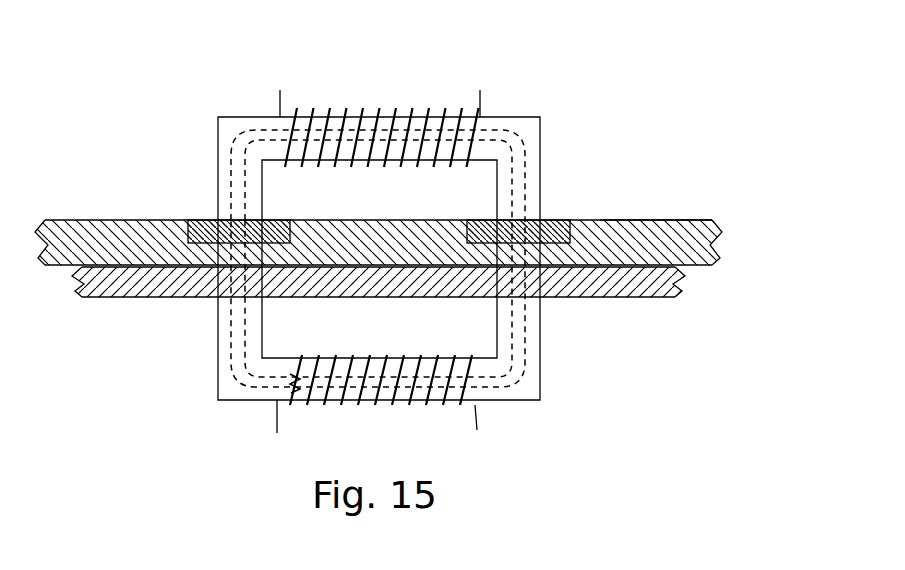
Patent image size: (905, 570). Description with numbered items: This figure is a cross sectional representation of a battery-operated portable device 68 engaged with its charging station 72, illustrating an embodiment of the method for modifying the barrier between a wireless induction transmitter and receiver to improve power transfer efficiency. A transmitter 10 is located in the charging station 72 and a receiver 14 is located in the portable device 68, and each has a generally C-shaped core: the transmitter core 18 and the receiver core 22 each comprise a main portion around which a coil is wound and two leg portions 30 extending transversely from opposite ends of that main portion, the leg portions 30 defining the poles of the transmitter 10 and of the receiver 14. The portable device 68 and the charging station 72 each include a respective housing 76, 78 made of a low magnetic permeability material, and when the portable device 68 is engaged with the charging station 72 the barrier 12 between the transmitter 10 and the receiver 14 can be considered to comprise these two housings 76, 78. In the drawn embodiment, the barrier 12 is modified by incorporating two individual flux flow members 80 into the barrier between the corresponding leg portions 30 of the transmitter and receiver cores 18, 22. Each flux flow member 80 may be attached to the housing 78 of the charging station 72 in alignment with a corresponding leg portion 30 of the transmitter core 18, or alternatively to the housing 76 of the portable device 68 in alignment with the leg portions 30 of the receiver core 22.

The transmitter 10 is at (565, 90).
The barrier 12 is at (640, 214).
The receiver 14 is at (582, 377).
The transmitter core 18 is at (233, 113).
The receiver core 22 is at (231, 402).
The leg portions 30 is at (263, 205).
The portable device 68 is at (116, 356).
The charging station 72 is at (86, 146).
The housing 76 is at (655, 300).
The housing 78 is at (704, 218).
The flux flow members 80 is at (200, 218).